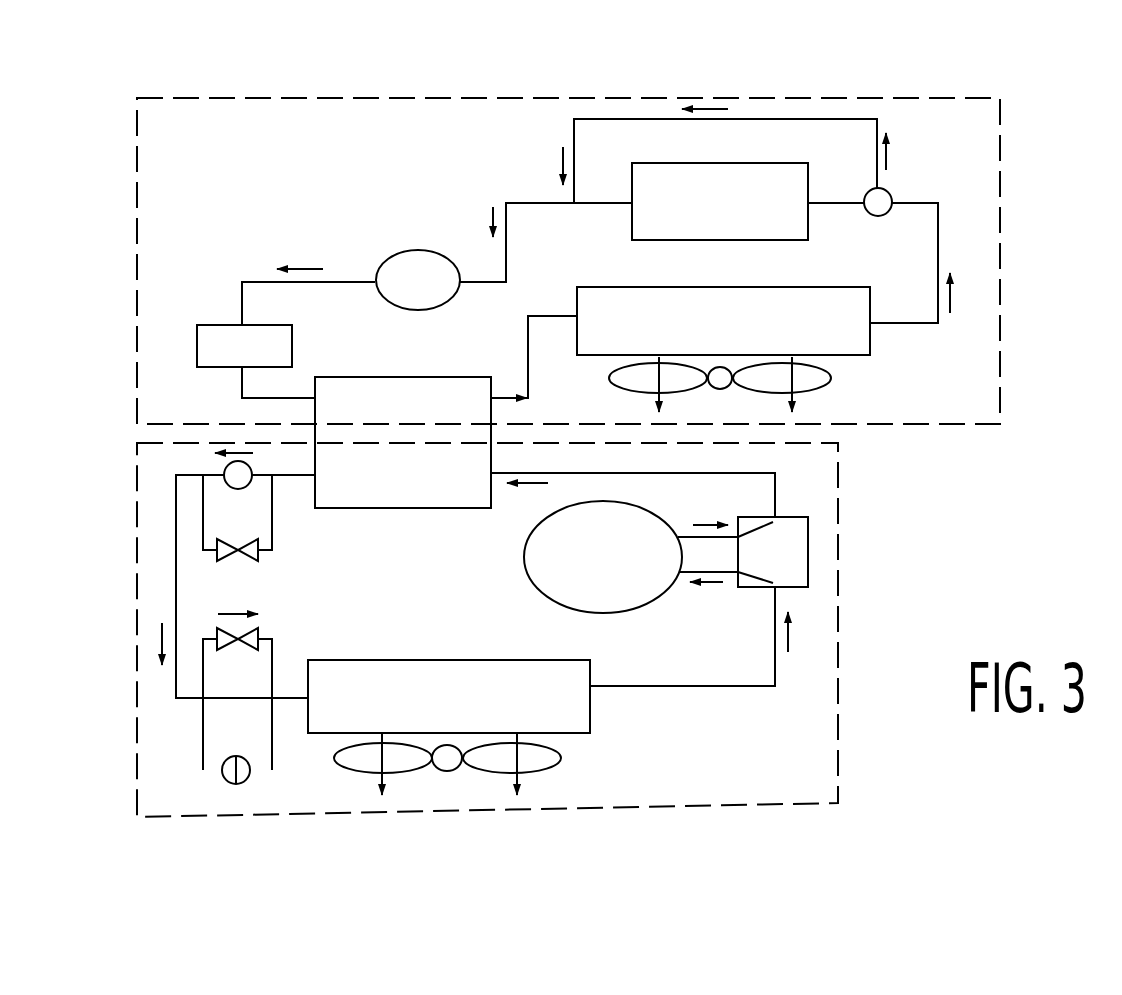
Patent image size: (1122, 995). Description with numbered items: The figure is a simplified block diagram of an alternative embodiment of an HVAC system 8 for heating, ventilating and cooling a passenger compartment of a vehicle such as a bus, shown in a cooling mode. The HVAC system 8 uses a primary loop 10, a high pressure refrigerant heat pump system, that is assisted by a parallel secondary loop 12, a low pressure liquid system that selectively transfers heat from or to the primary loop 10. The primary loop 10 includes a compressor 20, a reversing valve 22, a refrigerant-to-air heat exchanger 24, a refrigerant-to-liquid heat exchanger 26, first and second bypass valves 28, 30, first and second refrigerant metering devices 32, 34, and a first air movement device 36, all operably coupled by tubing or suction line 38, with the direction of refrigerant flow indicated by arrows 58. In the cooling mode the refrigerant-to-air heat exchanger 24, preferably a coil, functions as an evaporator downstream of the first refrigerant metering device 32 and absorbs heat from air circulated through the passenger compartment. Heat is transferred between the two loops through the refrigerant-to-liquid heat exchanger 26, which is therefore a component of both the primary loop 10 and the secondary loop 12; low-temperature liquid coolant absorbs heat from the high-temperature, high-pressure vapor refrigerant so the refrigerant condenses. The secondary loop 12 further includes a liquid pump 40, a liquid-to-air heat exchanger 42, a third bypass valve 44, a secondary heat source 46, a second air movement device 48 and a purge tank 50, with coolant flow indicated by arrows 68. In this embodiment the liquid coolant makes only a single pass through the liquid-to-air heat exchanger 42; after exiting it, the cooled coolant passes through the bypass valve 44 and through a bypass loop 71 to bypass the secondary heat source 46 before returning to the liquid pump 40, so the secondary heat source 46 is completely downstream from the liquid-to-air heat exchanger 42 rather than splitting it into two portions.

The HVAC system 8 is at (928, 575).
The primary loop 10 is at (840, 697).
The secondary loop 12 is at (1002, 205).
The compressor 20 is at (620, 612).
The reversing valve 22 is at (810, 543).
The refrigerant-to-air heat exchanger 24 is at (405, 658).
The refrigerant-to-liquid heat exchanger 26 is at (420, 508).
The first bypass valve 28 is at (225, 470).
The second bypass valve 30 is at (248, 783).
The first refrigerant metering device 32 is at (255, 638).
The second refrigerant metering device 34 is at (248, 557).
The first air movement device 36 is at (533, 758).
The tubing or suction line 38 is at (712, 692).
The liquid pump 40 is at (440, 305).
The liquid-to-air heat exchanger 42 is at (870, 355).
The third bypass valve 44 is at (952, 170).
The secondary heat source 46 is at (808, 220).
The second air movement device 48 is at (817, 393).
The purge tank 50 is at (218, 325).
The arrows indicating refrigerant flow 58 is at (258, 455).
The arrows indicating coolant flow 68 is at (565, 137).
The bypass loop 71 is at (757, 120).